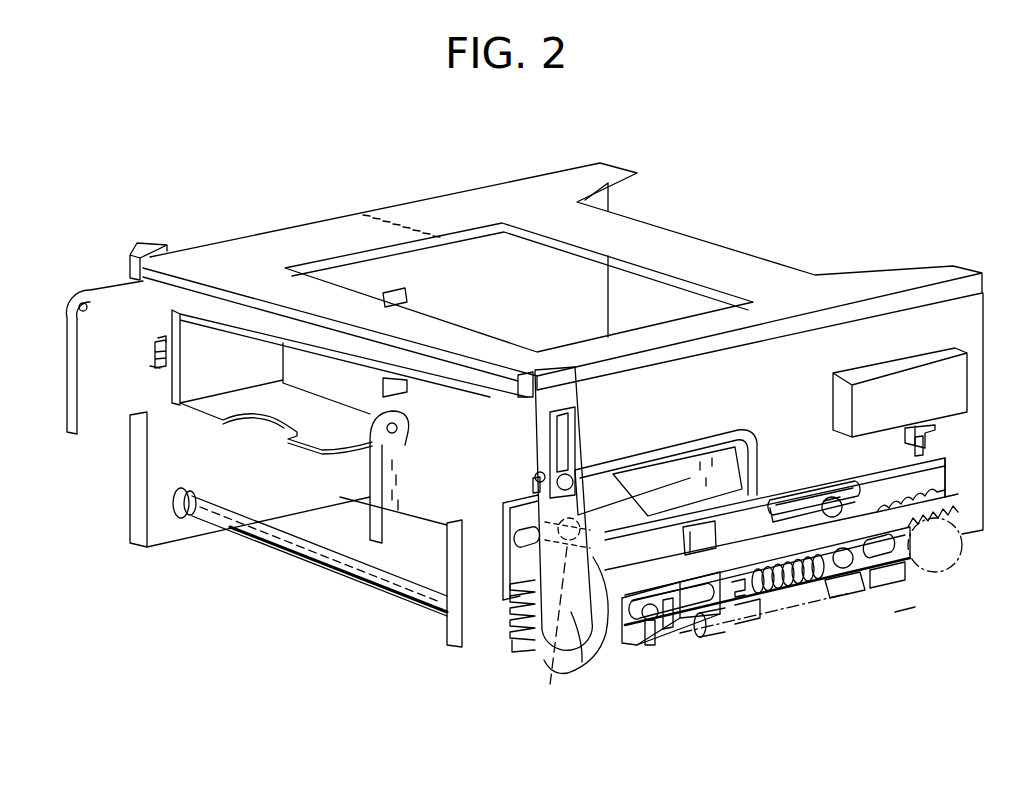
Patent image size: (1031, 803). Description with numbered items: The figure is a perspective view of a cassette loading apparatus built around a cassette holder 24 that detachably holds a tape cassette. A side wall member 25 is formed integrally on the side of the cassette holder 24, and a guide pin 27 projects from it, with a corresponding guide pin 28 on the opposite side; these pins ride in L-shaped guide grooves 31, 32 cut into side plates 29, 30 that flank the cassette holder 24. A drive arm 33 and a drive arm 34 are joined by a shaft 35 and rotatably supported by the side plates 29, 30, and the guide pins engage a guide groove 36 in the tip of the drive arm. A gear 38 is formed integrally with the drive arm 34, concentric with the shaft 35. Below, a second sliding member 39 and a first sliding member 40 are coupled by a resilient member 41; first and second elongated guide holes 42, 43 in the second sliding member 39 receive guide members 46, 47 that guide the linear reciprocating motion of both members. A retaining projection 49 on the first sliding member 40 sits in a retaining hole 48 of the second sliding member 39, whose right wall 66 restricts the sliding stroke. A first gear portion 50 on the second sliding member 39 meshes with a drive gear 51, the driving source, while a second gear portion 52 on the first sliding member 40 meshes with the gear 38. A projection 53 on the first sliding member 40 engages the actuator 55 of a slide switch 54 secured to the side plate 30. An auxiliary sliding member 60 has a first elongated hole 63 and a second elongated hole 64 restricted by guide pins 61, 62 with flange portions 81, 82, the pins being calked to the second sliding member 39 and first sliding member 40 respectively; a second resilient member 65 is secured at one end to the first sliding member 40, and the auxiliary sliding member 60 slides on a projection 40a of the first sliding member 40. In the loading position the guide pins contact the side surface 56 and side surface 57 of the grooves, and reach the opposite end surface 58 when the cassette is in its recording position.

The cassette holder 24 is at (313, 433).
The side wall member 25 is at (163, 400).
The guide pin 27 is at (154, 352).
The guide pin 28 is at (572, 478).
The side plate 29 is at (165, 480).
The side plate 30 is at (452, 620).
The L-shaped guide groove 31 is at (158, 338).
The L-shaped guide groove 32 is at (680, 450).
The drive arm 33 is at (152, 243).
The drive arm 34 is at (584, 645).
The shaft 35 is at (306, 545).
The guide groove 36 is at (555, 405).
The gear 38 is at (523, 645).
The second sliding member 39 is at (612, 617).
The first sliding member 40 is at (768, 475).
The projection 40a is at (938, 514).
The resilient member 41 is at (692, 624).
The first elongated guide hole 42 is at (525, 547).
The second elongated guide hole 43 is at (806, 606).
The guide member 46 is at (552, 672).
The guide member 47 is at (834, 497).
The retaining hole 48 is at (748, 608).
The retaining projection 49 is at (683, 545).
The first gear portion 50 is at (960, 502).
The drive gear 51 is at (962, 548).
The second gear portion 52 is at (505, 600).
The projection 53 is at (925, 449).
The slide switch 54 is at (957, 373).
The actuator 55 is at (936, 432).
The side surface 56 is at (538, 474).
The side surface 57 is at (150, 368).
The end surface 58 is at (782, 605).
The auxiliary sliding member 60 is at (906, 565).
The guide pin 61 is at (658, 632).
The guide pin 62 is at (852, 566).
The first elongated hole 63 is at (706, 622).
The second elongated hole 64 is at (882, 573).
The second resilient member 65 is at (840, 580).
The right wall 66 is at (723, 513).
The flange portion 81 is at (656, 627).
The flange portion 82 is at (905, 622).